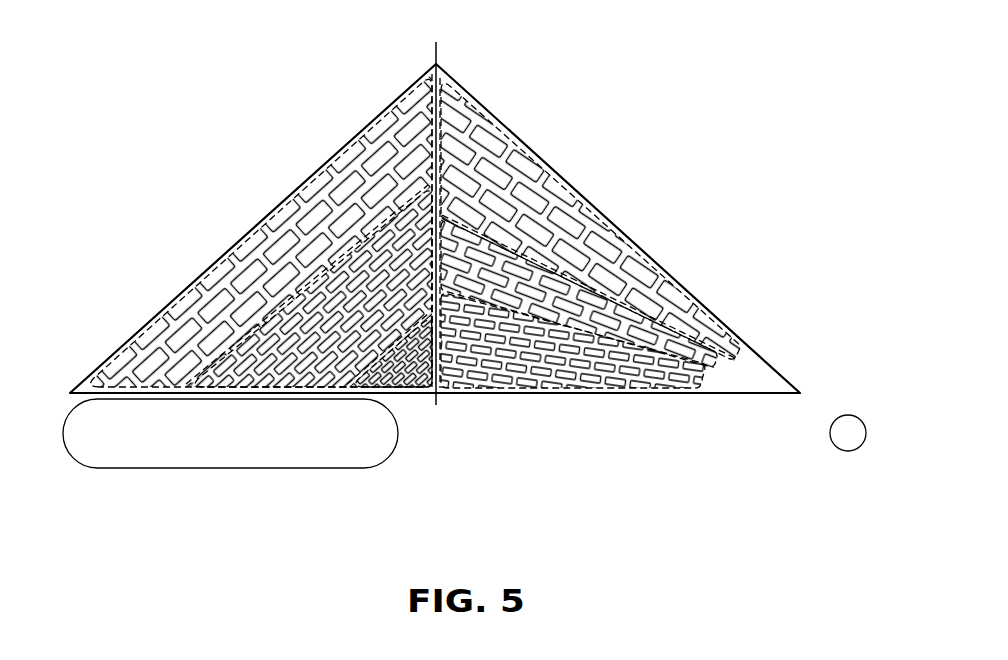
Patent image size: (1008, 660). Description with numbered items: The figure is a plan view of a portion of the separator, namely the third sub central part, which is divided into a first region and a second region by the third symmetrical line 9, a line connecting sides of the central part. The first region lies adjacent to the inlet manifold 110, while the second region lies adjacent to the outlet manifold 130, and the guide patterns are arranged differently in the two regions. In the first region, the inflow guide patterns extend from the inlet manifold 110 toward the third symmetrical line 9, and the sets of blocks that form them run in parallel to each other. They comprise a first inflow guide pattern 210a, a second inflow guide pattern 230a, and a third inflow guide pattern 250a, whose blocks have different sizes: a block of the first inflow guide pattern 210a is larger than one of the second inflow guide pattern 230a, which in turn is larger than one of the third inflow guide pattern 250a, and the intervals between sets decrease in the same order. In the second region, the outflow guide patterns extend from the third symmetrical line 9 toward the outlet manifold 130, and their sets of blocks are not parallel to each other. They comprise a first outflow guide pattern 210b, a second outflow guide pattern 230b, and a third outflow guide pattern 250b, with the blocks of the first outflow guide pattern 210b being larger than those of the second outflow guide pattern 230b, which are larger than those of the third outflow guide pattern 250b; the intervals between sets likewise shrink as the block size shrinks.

The third symmetrical line 9 is at (435, 52).
The inlet manifold 110 is at (205, 453).
The outlet manifold 130 is at (847, 438).
The first inflow guide pattern 210a is at (128, 392).
The first outflow guide pattern 210b is at (737, 340).
The second inflow guide pattern 230a is at (263, 393).
The second outflow guide pattern 230b is at (717, 372).
The third inflow guide pattern 250a is at (407, 393).
The third outflow guide pattern 250b is at (513, 382).